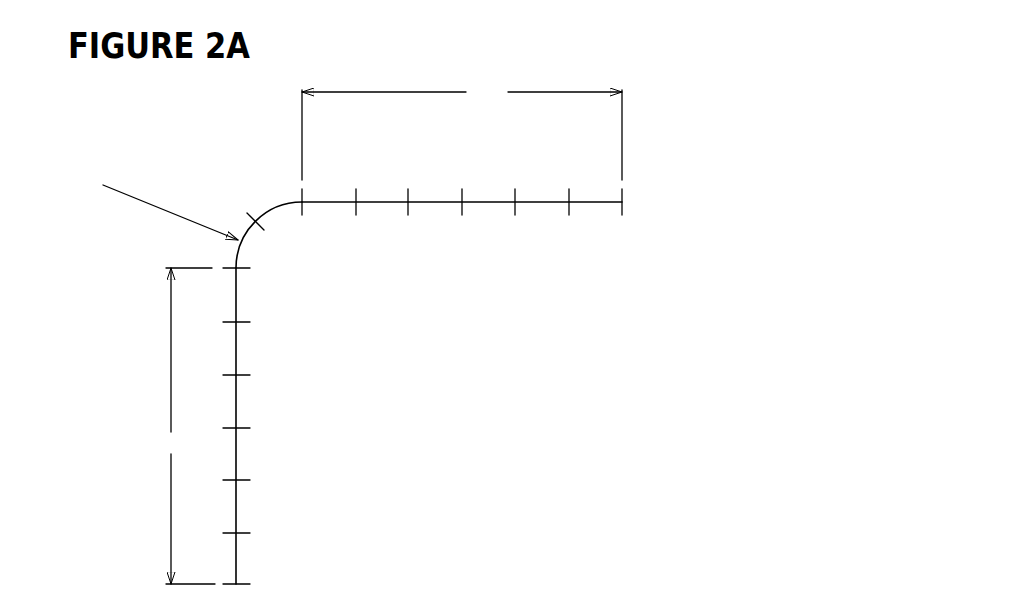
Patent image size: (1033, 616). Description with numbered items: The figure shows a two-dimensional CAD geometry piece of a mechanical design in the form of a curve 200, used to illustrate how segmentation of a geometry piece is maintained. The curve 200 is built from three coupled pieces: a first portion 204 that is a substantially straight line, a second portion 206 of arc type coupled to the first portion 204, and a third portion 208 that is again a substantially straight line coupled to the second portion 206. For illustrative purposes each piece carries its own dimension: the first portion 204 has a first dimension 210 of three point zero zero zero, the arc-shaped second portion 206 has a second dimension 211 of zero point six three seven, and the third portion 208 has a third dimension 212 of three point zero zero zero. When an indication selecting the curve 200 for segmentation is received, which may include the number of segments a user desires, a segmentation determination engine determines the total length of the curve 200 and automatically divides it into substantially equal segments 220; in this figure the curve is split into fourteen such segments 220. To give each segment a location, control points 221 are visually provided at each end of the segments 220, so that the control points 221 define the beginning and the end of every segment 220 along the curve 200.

The curve 200 is at (712, 58).
The first portion 204 is at (279, 446).
The second portion 206 is at (240, 190).
The third portion 208 is at (462, 245).
The first dimension 210 is at (150, 442).
The second dimension 211 is at (72, 177).
The third dimension 212 is at (490, 85).
The segments 220 is at (302, 205).
The control points 221 is at (240, 533).